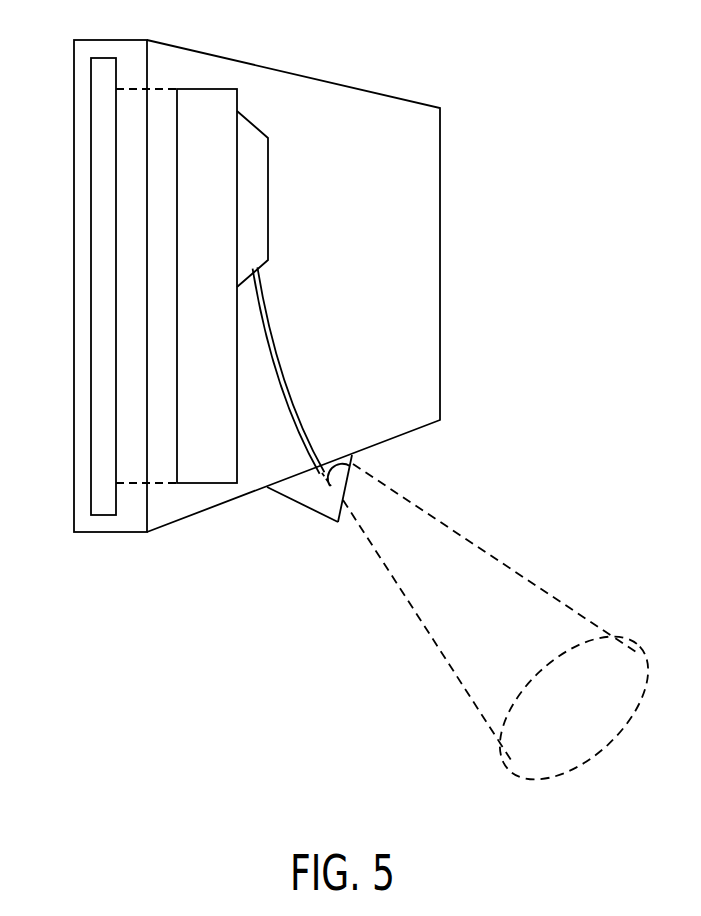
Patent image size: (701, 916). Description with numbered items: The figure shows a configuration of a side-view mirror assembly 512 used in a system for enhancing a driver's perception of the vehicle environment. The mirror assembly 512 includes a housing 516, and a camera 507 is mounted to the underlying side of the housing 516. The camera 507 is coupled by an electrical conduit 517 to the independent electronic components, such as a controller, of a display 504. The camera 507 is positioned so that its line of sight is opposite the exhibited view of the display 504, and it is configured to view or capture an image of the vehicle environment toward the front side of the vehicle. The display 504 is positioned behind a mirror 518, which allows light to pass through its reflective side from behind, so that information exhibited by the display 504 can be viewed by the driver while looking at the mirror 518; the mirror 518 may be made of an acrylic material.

The display 504 is at (207, 103).
The camera 507 is at (340, 490).
The side-view mirror assembly 512 is at (478, 208).
The housing 516 is at (349, 86).
The electrical conduit 517 is at (287, 366).
The mirror 518 is at (103, 448).